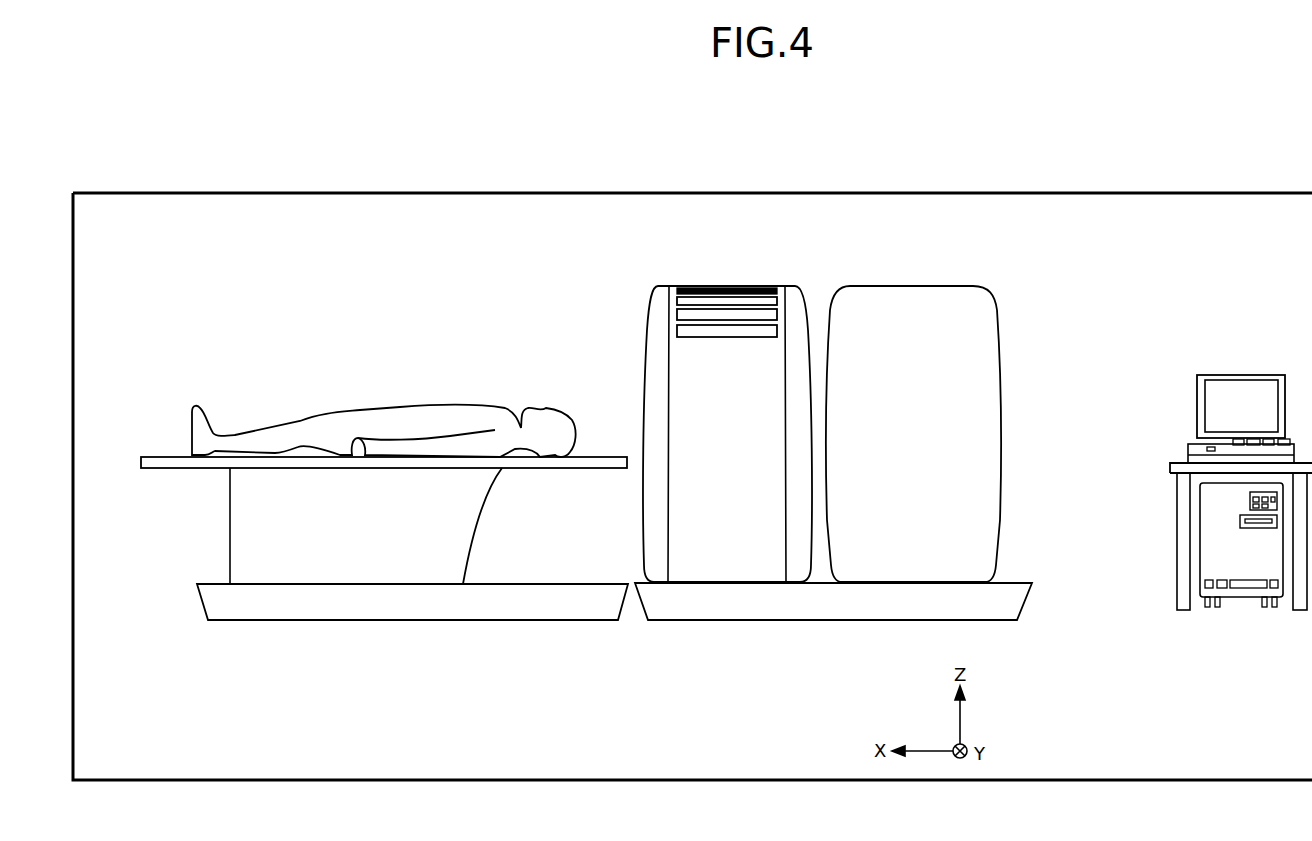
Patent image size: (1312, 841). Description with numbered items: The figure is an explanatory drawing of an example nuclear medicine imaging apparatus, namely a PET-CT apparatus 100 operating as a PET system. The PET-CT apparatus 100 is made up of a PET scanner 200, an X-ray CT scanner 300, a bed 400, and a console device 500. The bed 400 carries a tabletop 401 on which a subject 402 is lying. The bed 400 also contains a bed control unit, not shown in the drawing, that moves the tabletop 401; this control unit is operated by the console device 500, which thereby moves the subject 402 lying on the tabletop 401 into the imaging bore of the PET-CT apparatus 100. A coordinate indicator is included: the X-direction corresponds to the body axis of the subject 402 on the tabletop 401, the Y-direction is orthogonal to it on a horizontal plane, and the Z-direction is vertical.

The PET-CT apparatus 100 is at (611, 168).
The PET scanner 200 is at (990, 310).
The X-ray CT scanner 300 is at (719, 287).
The bed 400 is at (241, 553).
The tabletop 401 is at (141, 465).
The subject 402 is at (405, 407).
The console device 500 is at (1237, 376).